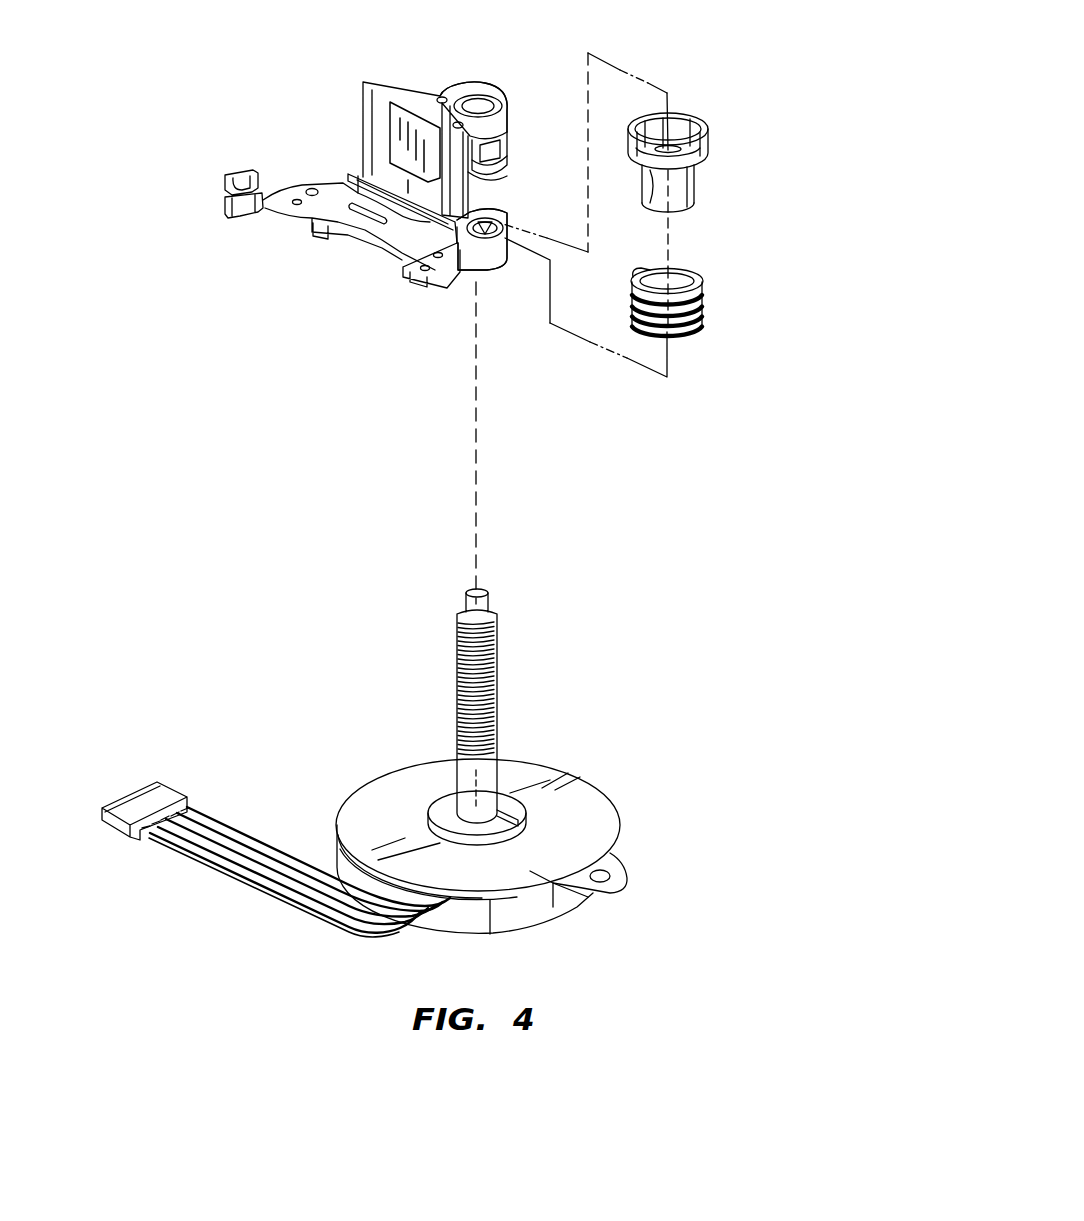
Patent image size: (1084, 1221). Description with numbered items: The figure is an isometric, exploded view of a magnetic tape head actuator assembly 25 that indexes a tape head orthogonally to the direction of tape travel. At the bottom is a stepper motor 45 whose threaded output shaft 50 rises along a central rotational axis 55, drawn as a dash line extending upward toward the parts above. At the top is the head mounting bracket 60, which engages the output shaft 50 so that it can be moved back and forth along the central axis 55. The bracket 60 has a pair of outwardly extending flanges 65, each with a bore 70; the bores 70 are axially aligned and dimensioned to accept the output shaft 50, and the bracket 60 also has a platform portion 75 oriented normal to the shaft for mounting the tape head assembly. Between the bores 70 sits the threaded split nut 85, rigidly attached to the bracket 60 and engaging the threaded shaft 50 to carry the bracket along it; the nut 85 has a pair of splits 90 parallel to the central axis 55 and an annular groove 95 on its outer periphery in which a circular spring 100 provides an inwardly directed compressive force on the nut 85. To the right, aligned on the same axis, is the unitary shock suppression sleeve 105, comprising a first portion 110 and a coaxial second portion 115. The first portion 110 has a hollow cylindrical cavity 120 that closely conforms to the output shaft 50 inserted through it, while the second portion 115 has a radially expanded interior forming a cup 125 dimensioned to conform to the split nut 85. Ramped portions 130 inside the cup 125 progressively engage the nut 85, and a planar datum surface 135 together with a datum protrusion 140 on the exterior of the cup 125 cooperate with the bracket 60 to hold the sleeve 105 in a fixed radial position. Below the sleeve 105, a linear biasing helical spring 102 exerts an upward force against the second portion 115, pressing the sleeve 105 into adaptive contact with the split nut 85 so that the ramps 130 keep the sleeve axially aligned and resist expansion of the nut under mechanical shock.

The magnetic tape head actuator assembly 25 is at (182, 980).
The stepper motor 45 is at (592, 808).
The threaded output shaft 50 is at (499, 668).
The central rotational axis 55 is at (477, 512).
The head mounting bracket 60 is at (363, 118).
The outwardly extending flanges 65 is at (462, 72).
The bore 70 is at (477, 101).
The platform portion 75 is at (357, 225).
The threaded split nut 85 is at (505, 136).
The splits 90 is at (505, 148).
The annular groove 95 is at (507, 160).
The circular spring 100 is at (478, 176).
The linear biasing helical spring 102 is at (703, 311).
The unitary shock suppression sleeve 105 is at (755, 142).
The first portion 110 is at (688, 183).
The second portion 115 is at (708, 142).
The hollow cylindrical cavity 120 is at (713, 226).
The cup 125 is at (647, 133).
The ramped portions 130 is at (678, 132).
The planar datum surface 135 is at (660, 188).
The datum protrusion 140 is at (655, 157).